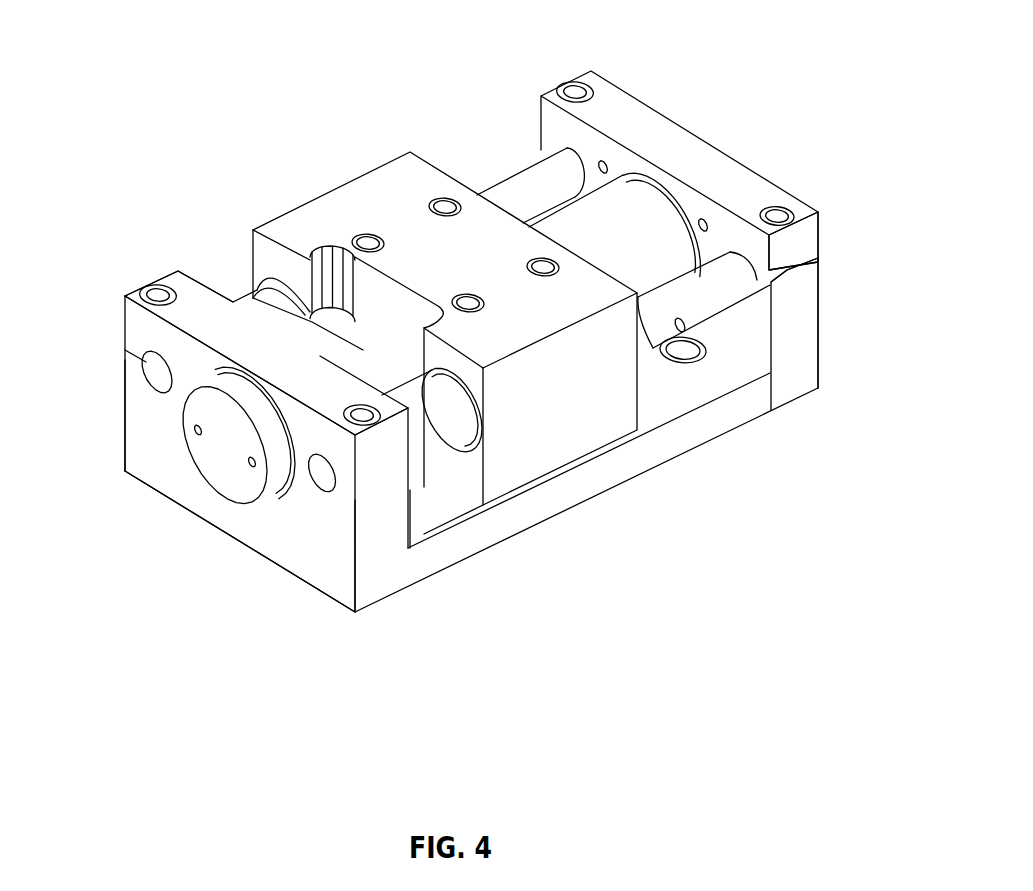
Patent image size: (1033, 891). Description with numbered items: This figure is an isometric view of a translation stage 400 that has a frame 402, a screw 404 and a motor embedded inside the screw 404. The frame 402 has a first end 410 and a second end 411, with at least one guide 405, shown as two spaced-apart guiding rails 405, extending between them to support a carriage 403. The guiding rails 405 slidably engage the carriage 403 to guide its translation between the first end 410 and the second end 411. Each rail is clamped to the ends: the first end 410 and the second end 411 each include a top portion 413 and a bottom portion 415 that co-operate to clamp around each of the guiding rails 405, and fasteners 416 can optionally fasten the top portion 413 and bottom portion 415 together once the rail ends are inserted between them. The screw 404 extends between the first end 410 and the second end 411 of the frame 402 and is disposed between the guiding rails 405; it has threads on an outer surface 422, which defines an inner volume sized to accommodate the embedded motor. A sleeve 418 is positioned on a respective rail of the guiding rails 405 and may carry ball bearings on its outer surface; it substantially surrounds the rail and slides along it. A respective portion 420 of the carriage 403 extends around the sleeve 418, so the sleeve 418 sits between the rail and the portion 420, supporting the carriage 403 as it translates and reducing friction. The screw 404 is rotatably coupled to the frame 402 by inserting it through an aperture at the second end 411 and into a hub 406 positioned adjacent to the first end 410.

The translation stage 400 is at (738, 78).
The frame 402 is at (588, 148).
The carriage 403 is at (355, 205).
The screw 404 is at (637, 238).
The guide 405 is at (687, 303).
The hub 406 is at (322, 368).
The first end 410 is at (138, 282).
The second end 411 is at (555, 82).
The top portion 413 is at (138, 332).
The bottom portion 415 is at (140, 415).
The fasteners 416 is at (790, 215).
The sleeve 418 is at (442, 413).
The portion 420 is at (580, 377).
The outer surface 422 is at (613, 208).